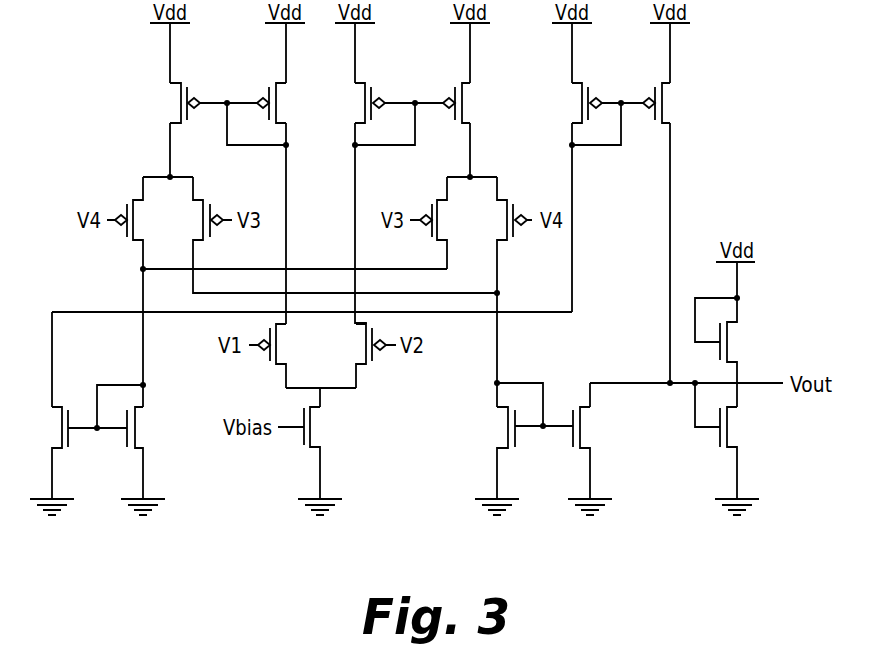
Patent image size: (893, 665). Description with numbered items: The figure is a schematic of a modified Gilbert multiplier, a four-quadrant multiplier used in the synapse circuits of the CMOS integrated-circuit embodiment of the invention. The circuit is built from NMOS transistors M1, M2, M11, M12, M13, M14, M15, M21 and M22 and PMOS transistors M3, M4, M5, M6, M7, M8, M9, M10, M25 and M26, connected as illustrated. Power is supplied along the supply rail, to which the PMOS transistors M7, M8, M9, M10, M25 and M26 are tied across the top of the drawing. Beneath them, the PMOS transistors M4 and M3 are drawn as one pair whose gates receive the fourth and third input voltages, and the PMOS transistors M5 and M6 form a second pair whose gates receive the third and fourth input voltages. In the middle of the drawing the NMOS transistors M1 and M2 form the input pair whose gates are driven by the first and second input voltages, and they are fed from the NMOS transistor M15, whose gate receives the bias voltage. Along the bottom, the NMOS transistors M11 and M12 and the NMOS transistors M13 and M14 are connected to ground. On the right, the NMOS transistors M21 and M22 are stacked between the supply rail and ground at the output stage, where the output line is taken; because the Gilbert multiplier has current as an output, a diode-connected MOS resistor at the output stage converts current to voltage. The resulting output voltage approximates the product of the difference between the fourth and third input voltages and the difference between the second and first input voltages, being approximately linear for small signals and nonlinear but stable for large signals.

The NMOS transistor M1 is at (285, 356).
The NMOS transistor M2 is at (358, 356).
The PMOS transistor M3 is at (197, 213).
The PMOS transistor M4 is at (141, 213).
The PMOS transistor M5 is at (444, 223).
The PMOS transistor M6 is at (501, 213).
The PMOS transistor M7 is at (171, 103).
The PMOS transistor M8 is at (286, 103).
The PMOS transistor M9 is at (357, 103).
The PMOS transistor M10 is at (473, 103).
The NMOS transistor M11 is at (72, 453).
The NMOS transistor M12 is at (155, 453).
The NMOS transistor M13 is at (516, 453).
The NMOS transistor M14 is at (601, 441).
The NMOS transistor M15 is at (332, 453).
The NMOS transistor M21 is at (748, 334).
The NMOS transistor M22 is at (748, 453).
The PMOS transistor M25 is at (571, 103).
The PMOS transistor M26 is at (672, 103).